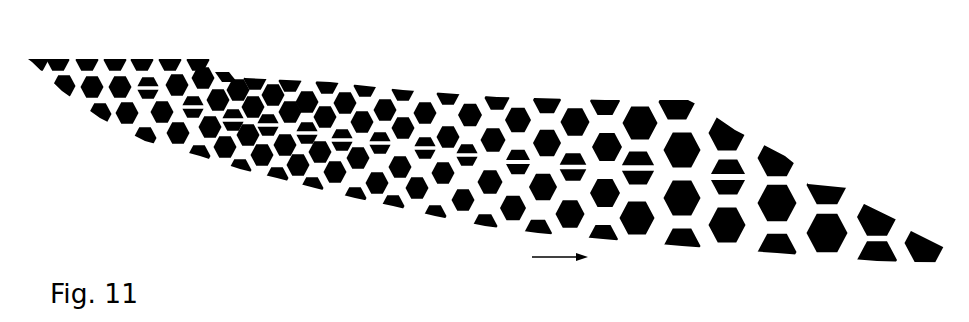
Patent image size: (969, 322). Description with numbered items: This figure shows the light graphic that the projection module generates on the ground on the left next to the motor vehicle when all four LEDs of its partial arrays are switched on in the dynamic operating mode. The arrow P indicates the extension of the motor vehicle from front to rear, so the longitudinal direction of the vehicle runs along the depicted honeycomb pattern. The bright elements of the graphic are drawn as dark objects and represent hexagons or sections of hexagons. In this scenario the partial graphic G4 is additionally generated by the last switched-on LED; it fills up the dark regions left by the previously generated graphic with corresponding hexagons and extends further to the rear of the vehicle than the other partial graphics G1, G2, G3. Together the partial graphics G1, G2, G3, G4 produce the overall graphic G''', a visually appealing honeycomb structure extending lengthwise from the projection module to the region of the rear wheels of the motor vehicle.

The overall graphic G''' is at (486, 144).
The partial graphic G1 is at (143, 115).
The partial graphic G2 is at (360, 147).
The partial graphic G3 is at (558, 169).
The partial graphic G4 is at (802, 182).
The arrow P is at (560, 271).